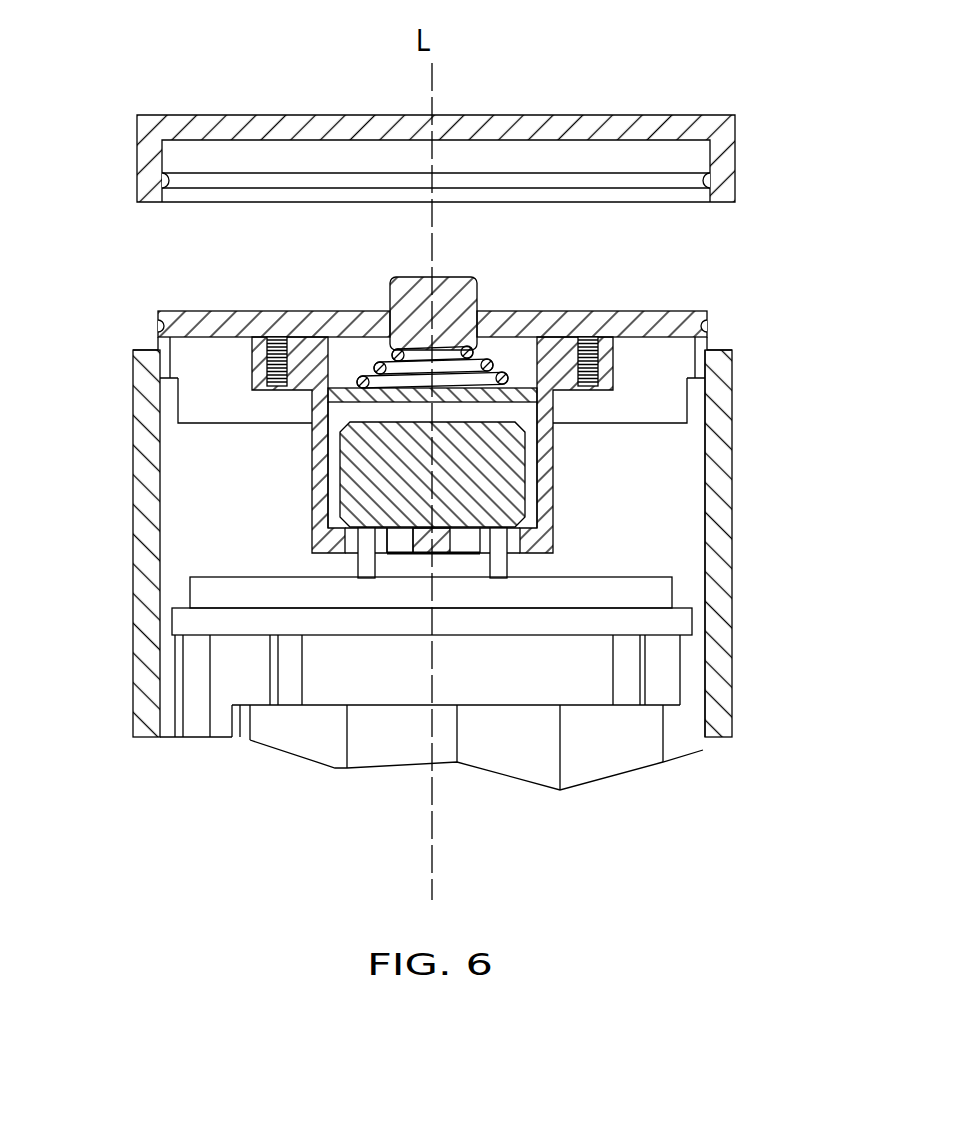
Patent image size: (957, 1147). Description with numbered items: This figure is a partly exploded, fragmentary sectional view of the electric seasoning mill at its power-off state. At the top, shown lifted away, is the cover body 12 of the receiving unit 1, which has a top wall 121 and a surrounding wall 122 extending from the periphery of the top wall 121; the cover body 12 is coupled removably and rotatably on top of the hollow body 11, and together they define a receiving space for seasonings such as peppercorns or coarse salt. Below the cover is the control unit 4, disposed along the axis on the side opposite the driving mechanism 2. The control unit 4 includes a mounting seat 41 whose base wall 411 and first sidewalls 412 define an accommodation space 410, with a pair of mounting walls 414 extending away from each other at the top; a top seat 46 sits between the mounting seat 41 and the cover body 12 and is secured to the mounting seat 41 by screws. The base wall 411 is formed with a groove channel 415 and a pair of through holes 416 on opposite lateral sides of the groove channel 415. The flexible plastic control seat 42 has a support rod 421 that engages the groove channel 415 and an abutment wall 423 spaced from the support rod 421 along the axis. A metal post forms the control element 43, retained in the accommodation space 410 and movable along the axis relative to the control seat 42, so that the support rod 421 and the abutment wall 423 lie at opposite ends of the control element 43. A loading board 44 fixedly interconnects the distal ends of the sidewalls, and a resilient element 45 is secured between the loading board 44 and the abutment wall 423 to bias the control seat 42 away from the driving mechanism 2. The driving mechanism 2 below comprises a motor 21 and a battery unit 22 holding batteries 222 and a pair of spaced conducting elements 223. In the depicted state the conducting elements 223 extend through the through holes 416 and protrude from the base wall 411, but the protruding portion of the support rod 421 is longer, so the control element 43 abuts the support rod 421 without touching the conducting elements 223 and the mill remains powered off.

The receiving unit 1 is at (473, 543).
The hollow body 11 is at (722, 530).
The cover body 12 is at (469, 102).
The top wall 121 is at (540, 125).
The surrounding wall 122 is at (715, 150).
The driving mechanism 2 is at (482, 725).
The motor 21 is at (590, 680).
The battery unit 22 is at (507, 789).
The batteries 222 is at (536, 742).
The conducting elements 223 is at (360, 563).
The control unit 4 is at (103, 305).
The mounting seat 41 is at (439, 595).
The accommodation space 410 is at (335, 446).
The base wall 411 is at (397, 540).
The first sidewalls 412 is at (318, 474).
The mounting walls 414 is at (262, 370).
The groove channel 415 is at (447, 540).
The through holes 416 is at (307, 540).
The control seat 42 is at (482, 285).
The support rod 421 is at (423, 540).
The abutment wall 423 is at (448, 295).
The control element 43 is at (513, 390).
The loading board 44 is at (510, 438).
The resilient element 45 is at (385, 352).
The top seat 46 is at (226, 322).